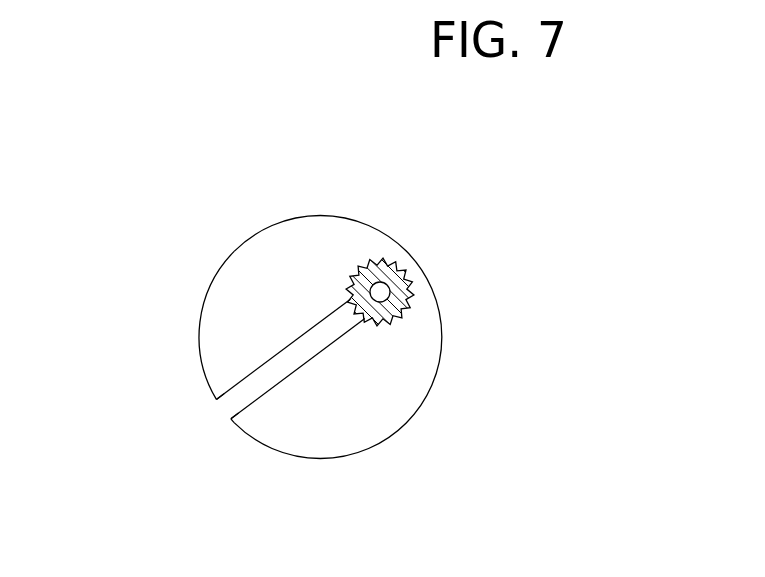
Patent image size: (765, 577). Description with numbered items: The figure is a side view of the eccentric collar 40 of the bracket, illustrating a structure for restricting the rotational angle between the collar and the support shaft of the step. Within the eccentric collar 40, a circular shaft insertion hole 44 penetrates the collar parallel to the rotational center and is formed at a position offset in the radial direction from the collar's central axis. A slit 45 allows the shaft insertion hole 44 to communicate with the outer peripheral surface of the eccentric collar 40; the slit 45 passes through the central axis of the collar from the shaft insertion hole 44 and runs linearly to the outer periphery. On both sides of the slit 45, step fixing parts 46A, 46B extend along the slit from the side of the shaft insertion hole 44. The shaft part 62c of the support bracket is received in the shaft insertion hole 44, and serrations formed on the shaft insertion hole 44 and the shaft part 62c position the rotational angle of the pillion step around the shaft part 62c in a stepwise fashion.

The eccentric collar 40 is at (226, 245).
The shaft insertion hole 44 is at (369, 262).
The shaft part 62c is at (398, 297).
The step fixing part 46A is at (263, 422).
The step fixing part 46B is at (217, 374).
The slit 45 is at (232, 405).